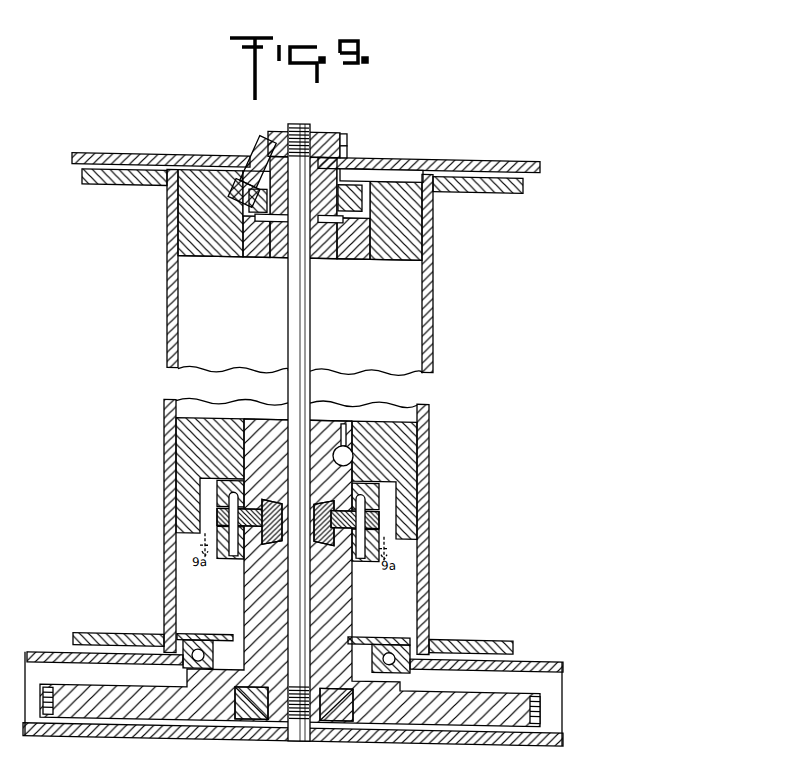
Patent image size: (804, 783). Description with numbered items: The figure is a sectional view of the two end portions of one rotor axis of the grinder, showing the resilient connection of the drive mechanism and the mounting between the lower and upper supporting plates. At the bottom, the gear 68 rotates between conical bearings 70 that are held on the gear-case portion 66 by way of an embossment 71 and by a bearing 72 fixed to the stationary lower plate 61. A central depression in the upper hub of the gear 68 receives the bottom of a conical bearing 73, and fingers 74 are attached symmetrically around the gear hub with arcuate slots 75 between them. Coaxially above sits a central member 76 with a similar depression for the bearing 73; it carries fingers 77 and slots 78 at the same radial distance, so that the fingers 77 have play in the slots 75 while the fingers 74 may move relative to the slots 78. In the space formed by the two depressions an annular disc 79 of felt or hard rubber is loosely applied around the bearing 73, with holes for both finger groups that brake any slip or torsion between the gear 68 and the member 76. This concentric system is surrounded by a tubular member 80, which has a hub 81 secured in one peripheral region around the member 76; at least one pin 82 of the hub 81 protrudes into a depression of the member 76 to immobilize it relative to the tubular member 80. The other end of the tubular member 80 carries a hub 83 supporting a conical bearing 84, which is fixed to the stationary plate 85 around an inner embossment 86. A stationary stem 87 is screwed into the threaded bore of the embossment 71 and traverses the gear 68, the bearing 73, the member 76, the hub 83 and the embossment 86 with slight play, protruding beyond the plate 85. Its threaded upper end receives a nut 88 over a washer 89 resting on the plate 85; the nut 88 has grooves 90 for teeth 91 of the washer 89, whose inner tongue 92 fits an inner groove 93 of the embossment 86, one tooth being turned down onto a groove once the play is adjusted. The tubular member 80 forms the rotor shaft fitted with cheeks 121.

The lower plate 61 is at (47, 657).
The gear-case portion 66 is at (82, 741).
The gear 68 is at (120, 712).
The conical bearings 70 is at (257, 724).
The embossment 71 is at (298, 740).
The bearing 72 is at (197, 642).
The conical bearing 73 is at (262, 536).
The fingers 74 is at (214, 545).
The arcuate slots 75 is at (365, 576).
The central member 76 is at (321, 431).
The fingers 77 is at (360, 504).
The slots 78 is at (236, 468).
The annular disc 79 is at (229, 513).
The tubular member 80 is at (167, 322).
The hub 81 is at (405, 458).
The pin 82 is at (347, 451).
The hub 83 is at (398, 244).
The conical bearing 84 is at (396, 210).
The stationary plate 85 is at (126, 158).
The embossment 86 is at (352, 169).
The stationary stem 87 is at (309, 314).
The nut 88 is at (278, 132).
The washer 89 is at (258, 153).
The grooves 90 is at (343, 134).
The teeth 91 is at (346, 152).
The inner tongue 92 is at (254, 159).
The inner groove 93 is at (280, 224).
The cheeks 121 is at (113, 194).